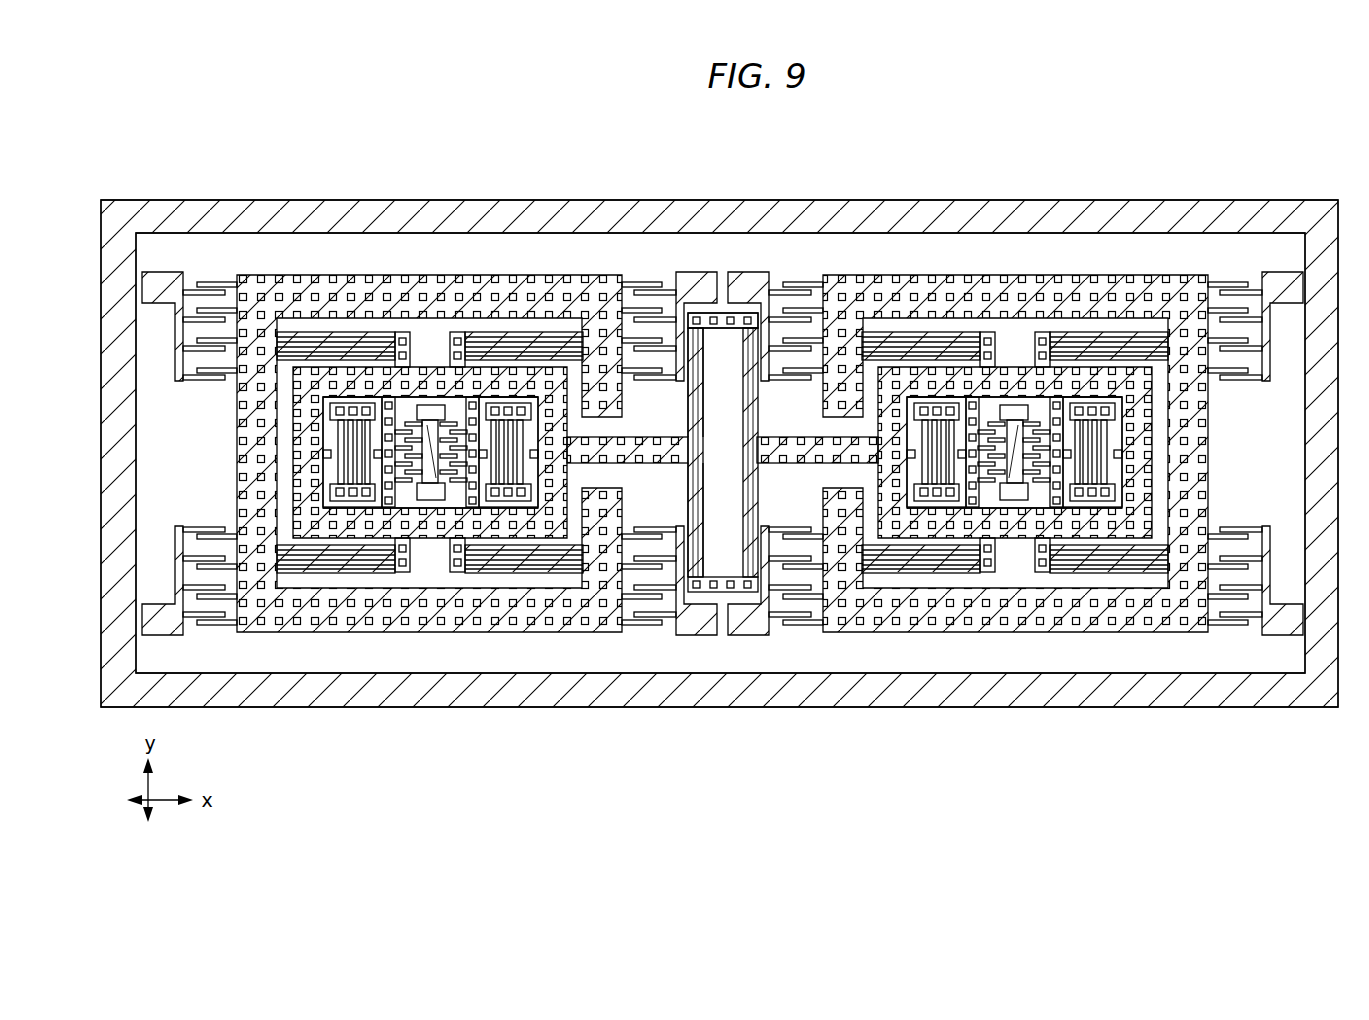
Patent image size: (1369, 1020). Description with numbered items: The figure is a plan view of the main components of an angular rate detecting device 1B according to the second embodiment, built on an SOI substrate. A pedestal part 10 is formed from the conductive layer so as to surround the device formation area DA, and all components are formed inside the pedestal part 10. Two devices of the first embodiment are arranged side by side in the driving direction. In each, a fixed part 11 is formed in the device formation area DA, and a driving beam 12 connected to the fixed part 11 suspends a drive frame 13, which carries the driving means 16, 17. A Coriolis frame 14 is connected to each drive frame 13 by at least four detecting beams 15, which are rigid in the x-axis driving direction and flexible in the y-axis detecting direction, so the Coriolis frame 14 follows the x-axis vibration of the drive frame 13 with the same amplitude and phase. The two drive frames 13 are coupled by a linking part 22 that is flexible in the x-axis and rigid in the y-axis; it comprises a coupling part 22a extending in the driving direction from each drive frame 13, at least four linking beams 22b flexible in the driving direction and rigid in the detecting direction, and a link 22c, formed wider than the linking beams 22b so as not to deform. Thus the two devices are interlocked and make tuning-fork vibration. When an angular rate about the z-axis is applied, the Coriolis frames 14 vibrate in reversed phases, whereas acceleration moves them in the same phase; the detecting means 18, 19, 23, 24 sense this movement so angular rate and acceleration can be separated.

The angular rate detecting device 1B is at (587, 180).
The pedestal part 10 is at (213, 210).
The device formation area DA is at (258, 240).
The fixed part 11 is at (375, 450).
The driving beam 12 is at (332, 436).
The drive frame 13 is at (427, 367).
The Coriolis frame 14 is at (378, 318).
The detecting beam 15 is at (333, 355).
The driving means 16 is at (407, 515).
The driving means 17 is at (457, 515).
The detecting means 18 is at (199, 258).
The detecting means 19 is at (212, 648).
The linking part 22 is at (724, 300).
The coupling part 22a is at (702, 452).
The linking beam 22b is at (702, 383).
The link 22c is at (723, 330).
The detecting means 23 is at (793, 258).
The detecting means 24 is at (792, 648).